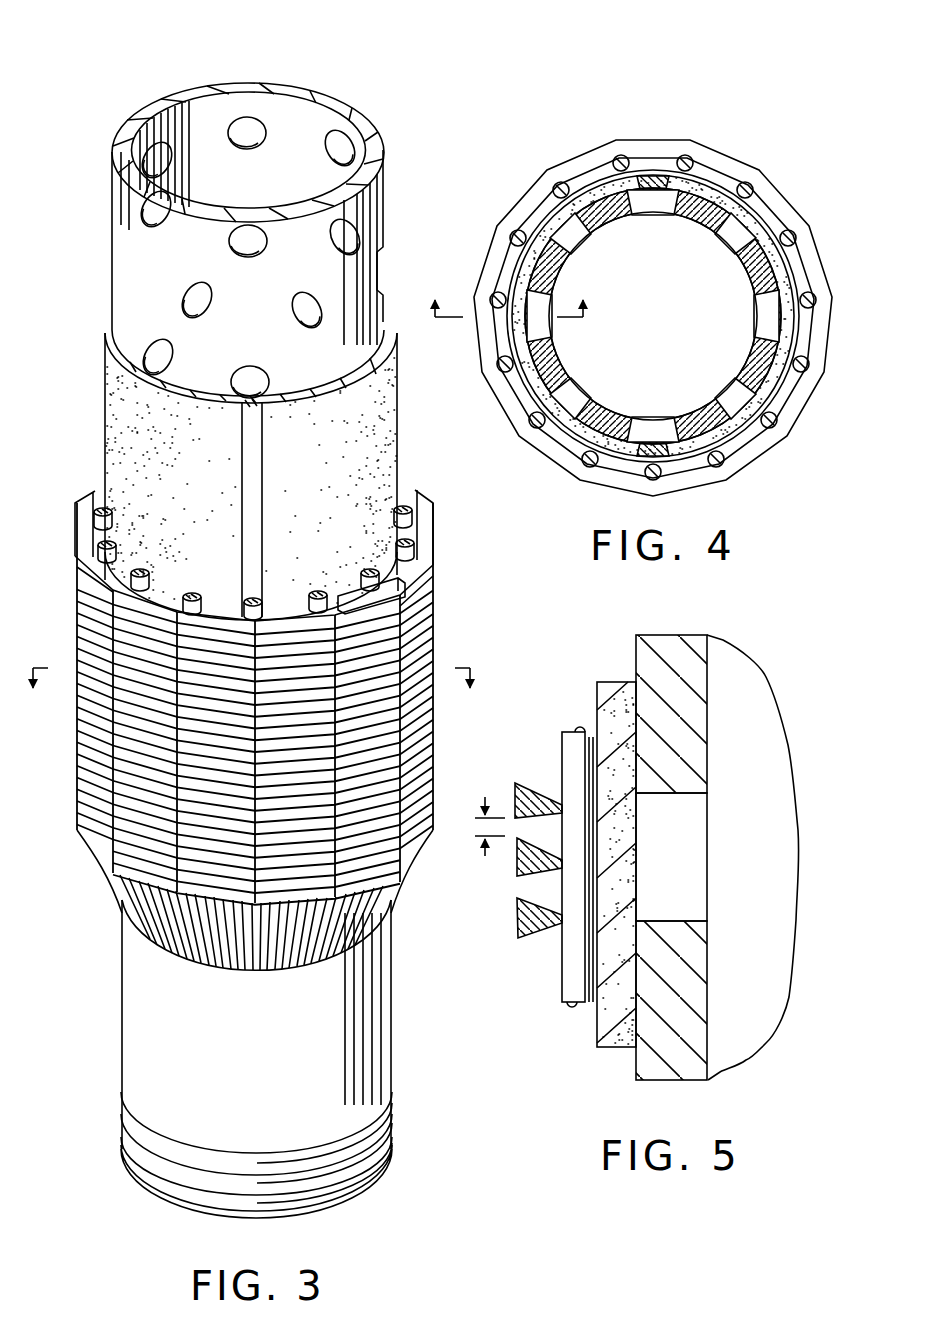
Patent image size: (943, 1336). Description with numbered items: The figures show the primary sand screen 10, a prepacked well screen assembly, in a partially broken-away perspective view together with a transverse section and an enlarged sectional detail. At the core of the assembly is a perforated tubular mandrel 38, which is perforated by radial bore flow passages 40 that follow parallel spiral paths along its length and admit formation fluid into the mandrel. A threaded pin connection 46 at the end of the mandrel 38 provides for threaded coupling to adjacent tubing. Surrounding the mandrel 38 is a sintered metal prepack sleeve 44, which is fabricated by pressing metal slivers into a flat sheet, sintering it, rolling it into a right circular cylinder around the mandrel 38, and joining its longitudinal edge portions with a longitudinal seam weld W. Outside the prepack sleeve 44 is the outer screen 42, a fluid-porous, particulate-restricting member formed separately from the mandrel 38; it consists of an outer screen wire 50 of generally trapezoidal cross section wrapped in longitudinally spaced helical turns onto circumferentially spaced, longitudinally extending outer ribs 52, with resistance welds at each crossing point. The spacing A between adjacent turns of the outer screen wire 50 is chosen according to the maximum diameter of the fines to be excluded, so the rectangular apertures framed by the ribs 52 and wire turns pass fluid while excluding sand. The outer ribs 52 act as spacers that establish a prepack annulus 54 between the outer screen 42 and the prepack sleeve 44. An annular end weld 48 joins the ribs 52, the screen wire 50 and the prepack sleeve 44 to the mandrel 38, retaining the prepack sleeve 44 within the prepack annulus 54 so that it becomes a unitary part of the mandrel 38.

In FIG. 3, the primary sand screen 10 is at (431, 90).
In FIG. 4, the primary sand screen 10 is at (794, 172).
In FIG. 5, the primary sand screen 10 is at (791, 664).
In FIG. 3, the perforated tubular mandrel 38 is at (133, 262).
In FIG. 4, the perforated tubular mandrel 38 is at (700, 214).
In FIG. 5, the perforated tubular mandrel 38 is at (672, 637).
In FIG. 4, the radial bore flow passages 40 is at (540, 332).
In FIG. 5, the radial bore flow passages 40 is at (708, 800).
In FIG. 3, the outer screen 42 is at (432, 644).
In FIG. 5, the outer screen 42 is at (514, 931).
In FIG. 3, the sintered metal prepack sleeve 44 is at (128, 426).
In FIG. 4, the sintered metal prepack sleeve 44 is at (791, 268).
In FIG. 5, the sintered metal prepack sleeve 44 is at (618, 687).
In FIG. 3, the threaded pin connection 46 is at (373, 1146).
In FIG. 3, the annular end weld 48 is at (125, 903).
In FIG. 3, the outer screen wire 50 is at (407, 557).
In FIG. 4, the outer screen wire 50 is at (638, 140).
In FIG. 5, the outer screen wire 50 is at (541, 783).
In FIG. 3, the outer ribs 52 is at (412, 530).
In FIG. 4, the outer ribs 52 is at (707, 148).
In FIG. 5, the outer ribs 52 is at (570, 737).
In FIG. 3, the prepack annulus 54 is at (98, 522).
In FIG. 4, the prepack annulus 54 is at (583, 178).
In FIG. 5, the prepack annulus 54 is at (623, 1047).
In FIG. 3, the longitudinal seam weld W is at (252, 508).
In FIG. 4, the longitudinal seam weld W is at (653, 450).
In FIG. 5, the aperture spacing A is at (490, 814).